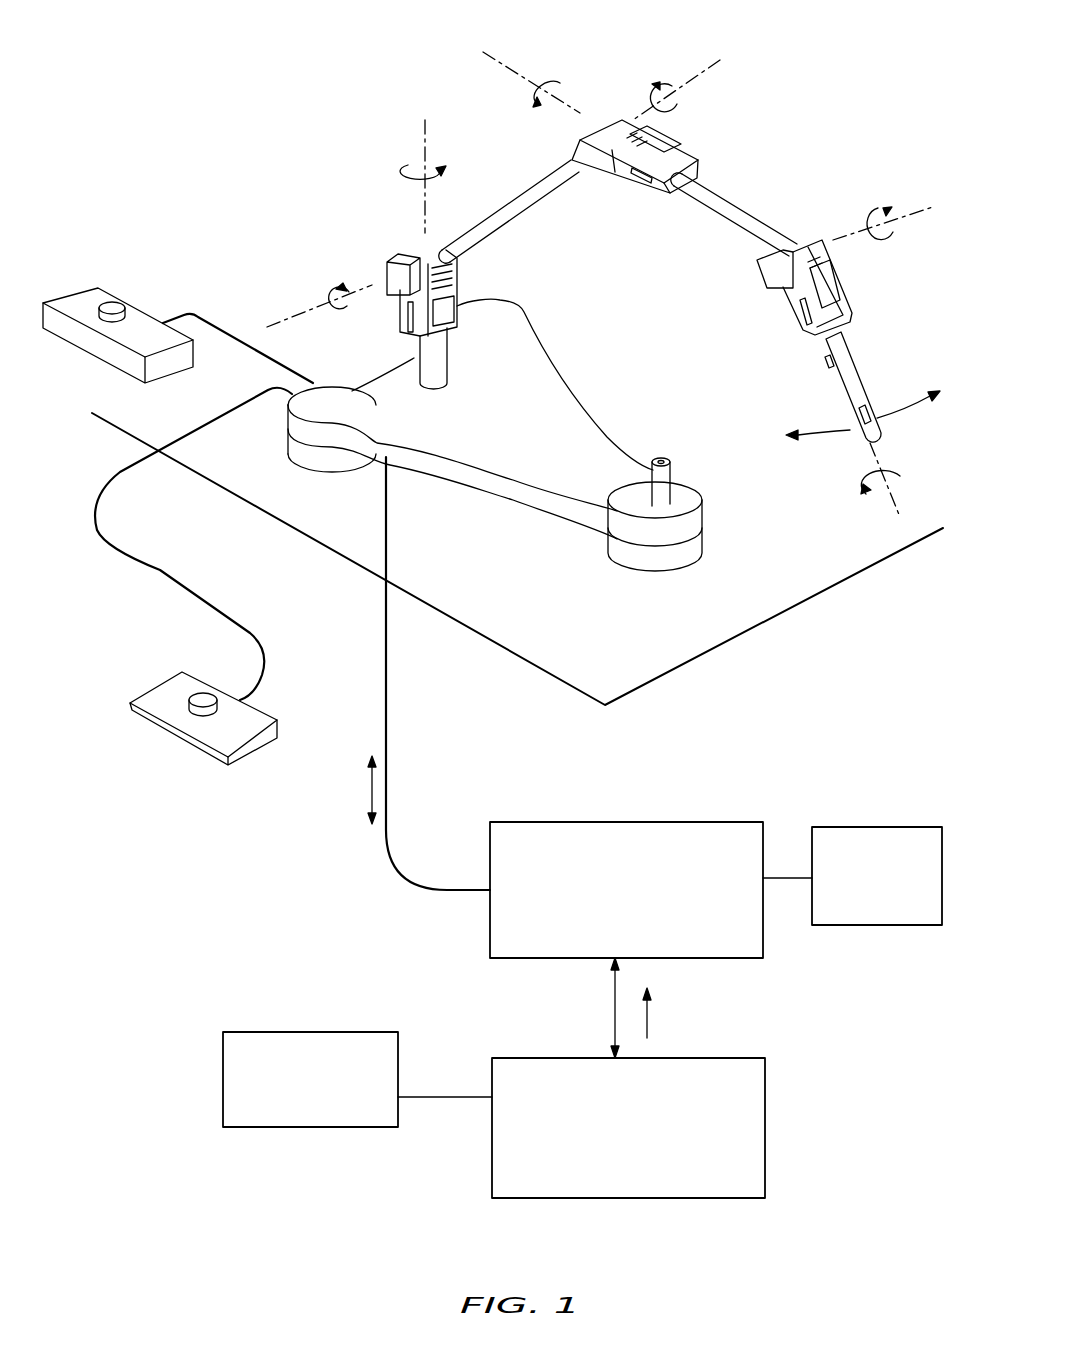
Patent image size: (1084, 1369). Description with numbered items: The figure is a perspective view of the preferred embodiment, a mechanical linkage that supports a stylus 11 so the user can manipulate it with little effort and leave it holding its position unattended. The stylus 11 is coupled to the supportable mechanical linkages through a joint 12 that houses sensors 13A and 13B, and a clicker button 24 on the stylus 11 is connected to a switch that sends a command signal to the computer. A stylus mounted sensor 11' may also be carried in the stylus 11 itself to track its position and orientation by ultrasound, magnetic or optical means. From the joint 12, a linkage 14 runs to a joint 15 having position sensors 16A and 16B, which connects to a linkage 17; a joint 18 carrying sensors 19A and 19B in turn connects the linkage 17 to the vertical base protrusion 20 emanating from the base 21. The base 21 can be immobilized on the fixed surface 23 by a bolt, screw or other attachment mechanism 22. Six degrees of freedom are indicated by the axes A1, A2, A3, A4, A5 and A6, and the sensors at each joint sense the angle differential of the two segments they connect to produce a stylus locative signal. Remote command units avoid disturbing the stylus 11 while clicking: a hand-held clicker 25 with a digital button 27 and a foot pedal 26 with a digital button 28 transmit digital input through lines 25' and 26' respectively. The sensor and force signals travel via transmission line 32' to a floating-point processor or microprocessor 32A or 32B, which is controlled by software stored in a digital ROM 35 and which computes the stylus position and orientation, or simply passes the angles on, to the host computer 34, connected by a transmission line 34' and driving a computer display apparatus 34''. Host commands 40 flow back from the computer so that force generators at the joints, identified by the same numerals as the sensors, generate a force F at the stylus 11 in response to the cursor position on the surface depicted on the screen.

The stylus 11 is at (869, 387).
The stylus mounted sensor 11' is at (895, 405).
The joint 12 is at (845, 292).
The sensor 13A is at (757, 265).
The sensor 13B is at (797, 308).
The linkage 14 is at (728, 193).
The joint 15 is at (680, 137).
The position sensor 16A is at (602, 170).
The position sensor 16B is at (643, 175).
The linkage 17 is at (532, 178).
The joint 18 is at (405, 325).
The sensor 19A is at (400, 258).
The sensor 19B is at (408, 307).
The vertical base protrusion 20 is at (427, 370).
The base 21 is at (517, 450).
The attachment mechanism 22 is at (650, 560).
The fixed surface 23 is at (362, 570).
The clicker button 24 is at (825, 360).
The hand-held clicker unit 25 is at (118, 343).
The line 25' is at (238, 329).
The foot pedal 26 is at (202, 727).
The line 26' is at (193, 544).
The digital button 27 is at (113, 306).
The digital button 28 is at (208, 693).
The transmission line 32' is at (386, 673).
The microprocessor 32A is at (620, 822).
The microprocessor 32B is at (627, 879).
The host computer system 34 is at (584, 1129).
The transmission line 34' is at (568, 1008).
The computer display apparatus 34'' is at (357, 1052).
The digital ROM 35 is at (847, 828).
The host commands 40 is at (792, 1027).
The axis A1 is at (319, 302).
The axis A2 is at (402, 176).
The axis A3 is at (531, 82).
The axis A4 is at (678, 66).
The axis A5 is at (883, 207).
The axis A6 is at (908, 480).
The force F is at (858, 429).